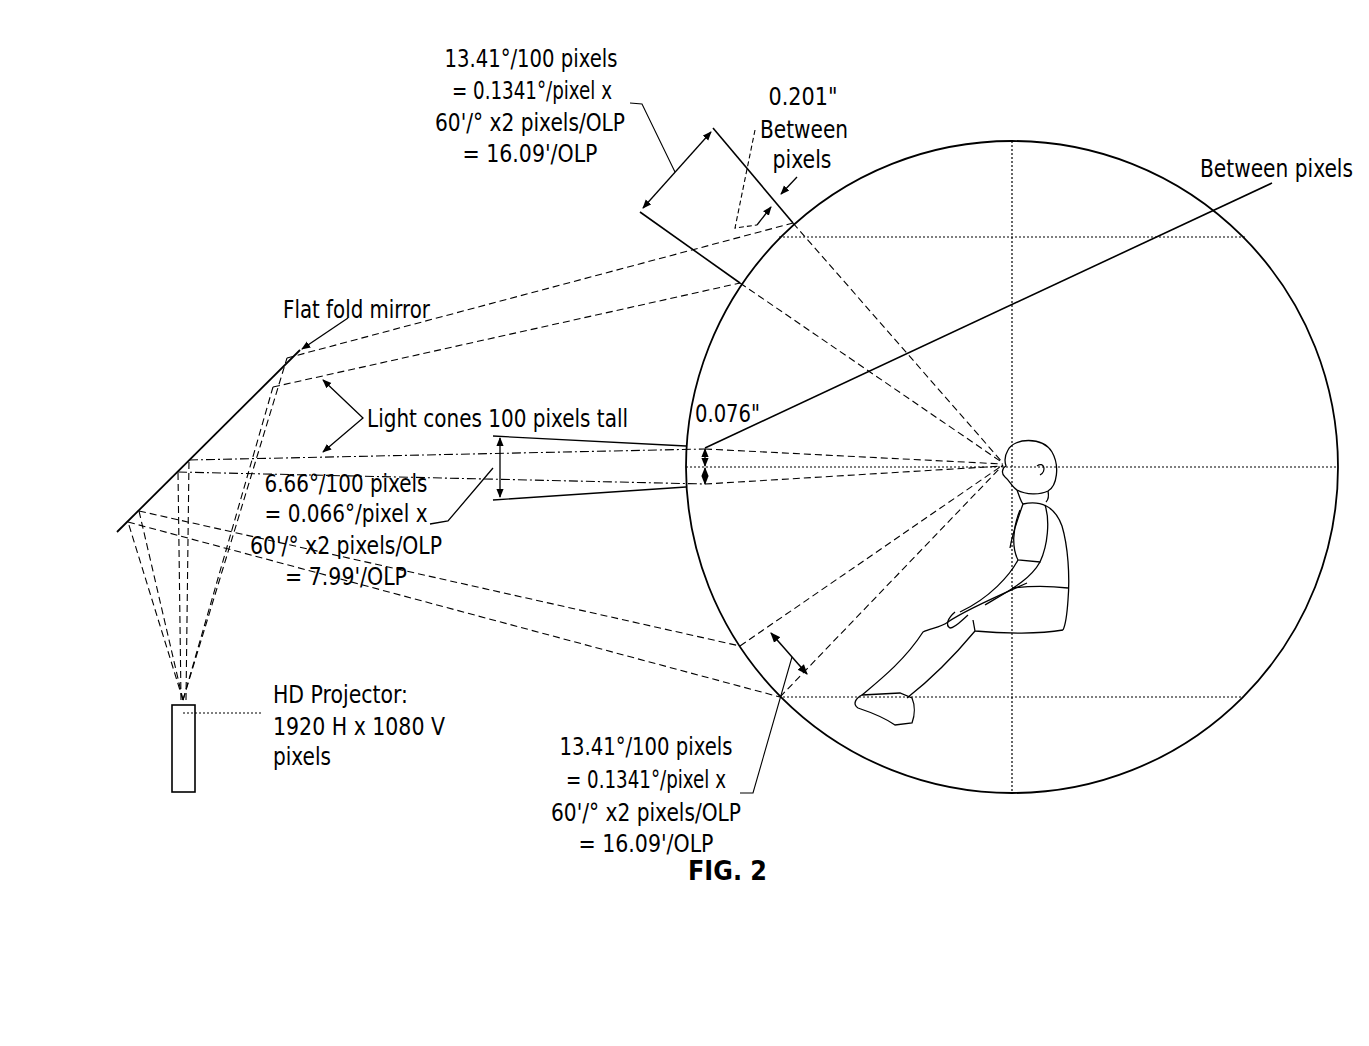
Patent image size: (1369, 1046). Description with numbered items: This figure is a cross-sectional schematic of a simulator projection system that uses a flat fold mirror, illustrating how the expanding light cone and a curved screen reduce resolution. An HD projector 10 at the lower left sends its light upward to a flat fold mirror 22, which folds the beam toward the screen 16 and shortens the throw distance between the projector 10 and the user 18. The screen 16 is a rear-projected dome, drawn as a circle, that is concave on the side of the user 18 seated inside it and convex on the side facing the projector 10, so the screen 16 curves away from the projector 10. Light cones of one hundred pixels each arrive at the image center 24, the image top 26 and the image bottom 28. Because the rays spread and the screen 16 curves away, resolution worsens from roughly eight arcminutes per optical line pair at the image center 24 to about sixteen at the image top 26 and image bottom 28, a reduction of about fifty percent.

The projector 10 is at (196, 746).
The screen 16 is at (697, 376).
The user 18 is at (1068, 516).
The flat fold mirror 22 is at (220, 428).
The image center 24 is at (688, 474).
The image top 26 is at (771, 250).
The image bottom 28 is at (755, 672).